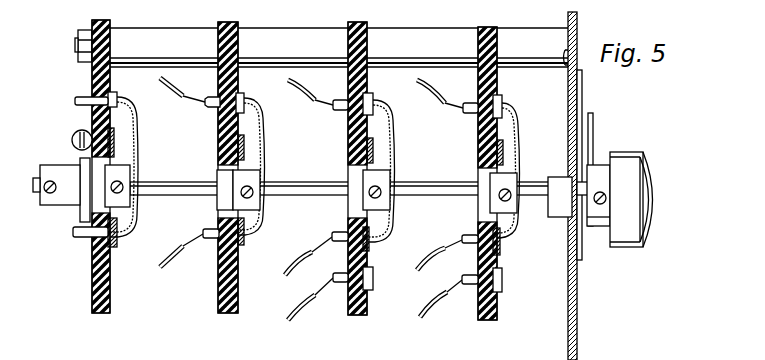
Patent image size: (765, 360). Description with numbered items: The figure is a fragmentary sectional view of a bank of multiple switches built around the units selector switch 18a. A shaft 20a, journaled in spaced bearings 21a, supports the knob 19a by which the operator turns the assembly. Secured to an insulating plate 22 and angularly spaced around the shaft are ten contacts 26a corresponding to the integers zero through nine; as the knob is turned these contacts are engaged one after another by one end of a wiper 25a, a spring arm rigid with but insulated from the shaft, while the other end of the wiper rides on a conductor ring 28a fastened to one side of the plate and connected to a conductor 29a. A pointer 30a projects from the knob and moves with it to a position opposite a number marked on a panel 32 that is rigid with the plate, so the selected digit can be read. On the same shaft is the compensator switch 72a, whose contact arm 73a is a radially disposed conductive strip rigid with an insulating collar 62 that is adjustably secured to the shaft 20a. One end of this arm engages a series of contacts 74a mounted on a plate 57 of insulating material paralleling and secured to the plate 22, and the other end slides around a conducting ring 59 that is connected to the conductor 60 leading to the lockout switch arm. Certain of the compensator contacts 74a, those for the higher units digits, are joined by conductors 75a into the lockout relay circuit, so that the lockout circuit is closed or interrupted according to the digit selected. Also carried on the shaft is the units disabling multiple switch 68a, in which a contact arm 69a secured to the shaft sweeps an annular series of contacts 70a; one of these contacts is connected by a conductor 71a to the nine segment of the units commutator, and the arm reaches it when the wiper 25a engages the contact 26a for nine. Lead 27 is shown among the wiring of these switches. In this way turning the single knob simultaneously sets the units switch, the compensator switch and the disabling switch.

The units switch 18a is at (486, 196).
The knob 19a is at (652, 182).
The shaft 20a is at (296, 186).
The bearings 21a is at (70, 172).
The insulating plate 22 is at (495, 32).
The wiper 25a is at (522, 141).
The contacts 26a is at (499, 97).
The lead wire 27 is at (448, 106).
The conductor ring 28a is at (499, 251).
The conductor 29a is at (450, 241).
The pointer 30a is at (594, 141).
The panel 32 is at (578, 294).
The insulating plate 57 is at (363, 27).
The conducting ring 59 is at (370, 247).
The conductor 60 is at (328, 237).
The insulating collar 62 is at (384, 181).
The units disabling multiple switch 68a is at (240, 170).
The contact arm 69a is at (265, 121).
The contacts 70a is at (246, 99).
The conductor 71a is at (198, 103).
The compensator switch 72a is at (361, 196).
The contact arm 73a is at (393, 137).
The contacts 74a is at (374, 287).
The conductors 75a is at (318, 100).